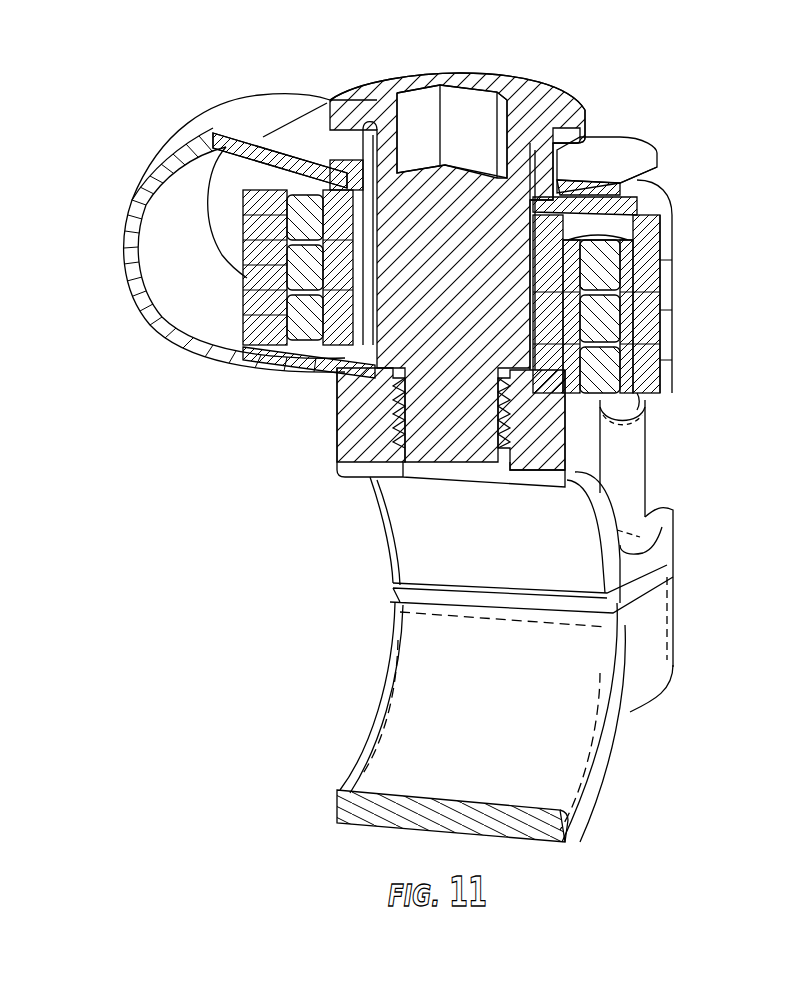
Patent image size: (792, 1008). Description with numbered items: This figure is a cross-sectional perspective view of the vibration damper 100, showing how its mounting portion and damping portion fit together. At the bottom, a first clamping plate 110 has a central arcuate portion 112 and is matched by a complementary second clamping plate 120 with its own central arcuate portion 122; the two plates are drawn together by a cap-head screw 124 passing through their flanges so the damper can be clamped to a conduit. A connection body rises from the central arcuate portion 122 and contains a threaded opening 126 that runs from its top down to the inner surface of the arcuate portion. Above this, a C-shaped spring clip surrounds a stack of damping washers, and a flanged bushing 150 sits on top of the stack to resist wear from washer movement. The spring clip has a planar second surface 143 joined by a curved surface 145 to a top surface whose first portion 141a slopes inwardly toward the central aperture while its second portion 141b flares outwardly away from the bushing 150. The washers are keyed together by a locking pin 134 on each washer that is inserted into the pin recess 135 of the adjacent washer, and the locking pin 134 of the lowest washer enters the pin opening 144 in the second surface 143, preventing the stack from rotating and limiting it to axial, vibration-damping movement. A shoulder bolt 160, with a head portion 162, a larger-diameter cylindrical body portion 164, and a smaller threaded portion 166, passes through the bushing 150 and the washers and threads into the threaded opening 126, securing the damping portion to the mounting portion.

The vibration damper 100 is at (147, 99).
The first clamping plate 110 is at (625, 721).
The central arcuate portion 112 is at (385, 763).
The second clamping plate 120 is at (673, 550).
The central arcuate portion 122 is at (412, 545).
The cap-head screw 124 is at (648, 487).
The threaded opening 126 is at (423, 463).
The locking pin 134 is at (600, 372).
The pin recess 135 is at (285, 335).
The first portion 141a is at (295, 113).
The second portion 141b is at (623, 152).
The second surface 143 is at (230, 362).
The pin opening 144 is at (630, 397).
The curved surface 145 is at (128, 262).
The flanged bushing 150 is at (633, 196).
The shoulder bolt 160 is at (514, 78).
The head portion 162 is at (400, 83).
The cylindrical body portion 164 is at (470, 285).
The threaded portion 166 is at (468, 432).